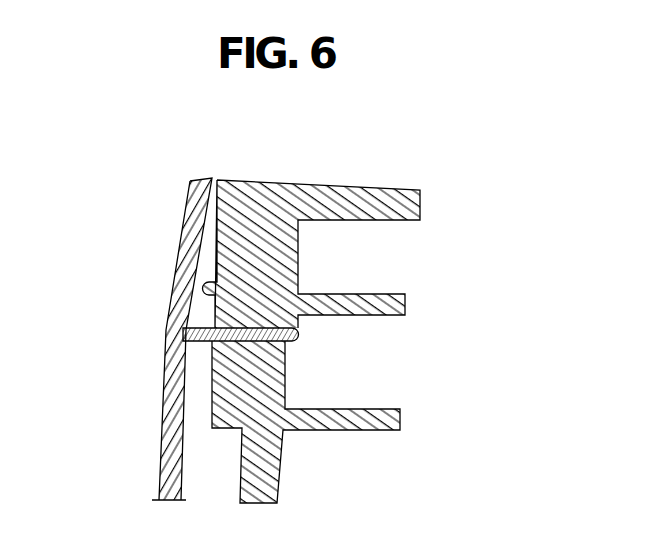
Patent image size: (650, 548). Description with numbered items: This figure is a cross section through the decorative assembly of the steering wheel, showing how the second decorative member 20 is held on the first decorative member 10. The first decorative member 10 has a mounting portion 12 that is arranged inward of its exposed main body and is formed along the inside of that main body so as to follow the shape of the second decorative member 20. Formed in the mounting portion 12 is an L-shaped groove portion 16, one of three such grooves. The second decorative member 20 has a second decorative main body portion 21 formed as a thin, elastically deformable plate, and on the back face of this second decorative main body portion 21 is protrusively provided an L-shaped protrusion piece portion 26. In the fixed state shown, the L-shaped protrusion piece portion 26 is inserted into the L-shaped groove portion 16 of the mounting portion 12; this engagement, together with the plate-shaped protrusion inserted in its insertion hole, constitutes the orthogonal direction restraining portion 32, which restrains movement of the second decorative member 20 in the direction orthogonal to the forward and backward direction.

The first decorative member 10 is at (333, 325).
The mounting portion 12 is at (303, 247).
The L-shaped groove portion 16 is at (229, 352).
The second decorative member 20 is at (146, 339).
The second decorative main body portion 21 is at (168, 418).
The L-shaped protrusion piece portion 26 is at (295, 336).
The orthogonal direction restraining portion 32 is at (326, 415).